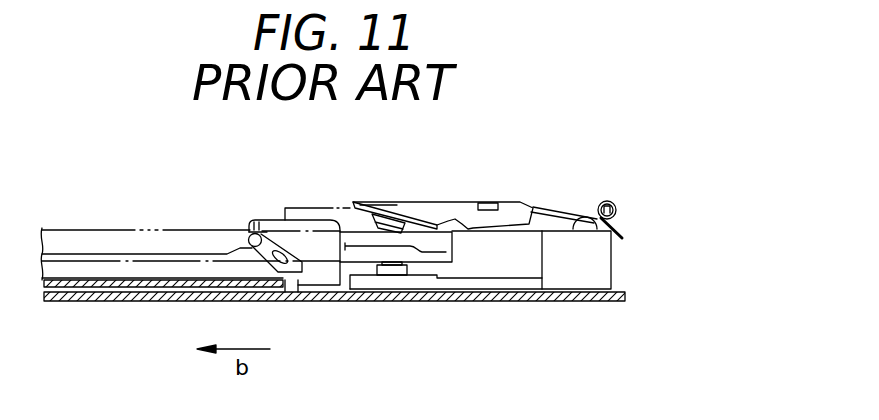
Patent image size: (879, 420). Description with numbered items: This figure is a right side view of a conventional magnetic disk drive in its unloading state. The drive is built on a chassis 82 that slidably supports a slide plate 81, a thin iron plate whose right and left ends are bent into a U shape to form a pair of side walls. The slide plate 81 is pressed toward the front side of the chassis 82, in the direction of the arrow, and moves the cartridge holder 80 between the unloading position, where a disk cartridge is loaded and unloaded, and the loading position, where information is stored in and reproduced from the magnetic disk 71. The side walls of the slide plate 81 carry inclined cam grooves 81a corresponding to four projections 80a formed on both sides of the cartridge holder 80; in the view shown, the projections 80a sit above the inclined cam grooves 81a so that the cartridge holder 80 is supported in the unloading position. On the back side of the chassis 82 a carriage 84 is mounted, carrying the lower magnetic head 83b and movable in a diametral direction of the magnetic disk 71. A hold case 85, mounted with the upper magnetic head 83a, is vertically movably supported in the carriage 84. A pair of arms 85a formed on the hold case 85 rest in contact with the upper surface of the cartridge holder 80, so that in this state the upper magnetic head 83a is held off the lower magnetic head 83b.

The magnetic disk 71 is at (448, 261).
The cartridge holder 80 is at (313, 210).
The projections 80a is at (251, 219).
The slide plate 81 is at (172, 288).
The inclined cam grooves 81a is at (292, 286).
The chassis 82 is at (440, 301).
The upper magnetic head 83a is at (393, 212).
The lower magnetic head 83b is at (391, 268).
The carriage 84 is at (604, 256).
The hold case 85 is at (452, 202).
The arms 85a is at (492, 204).